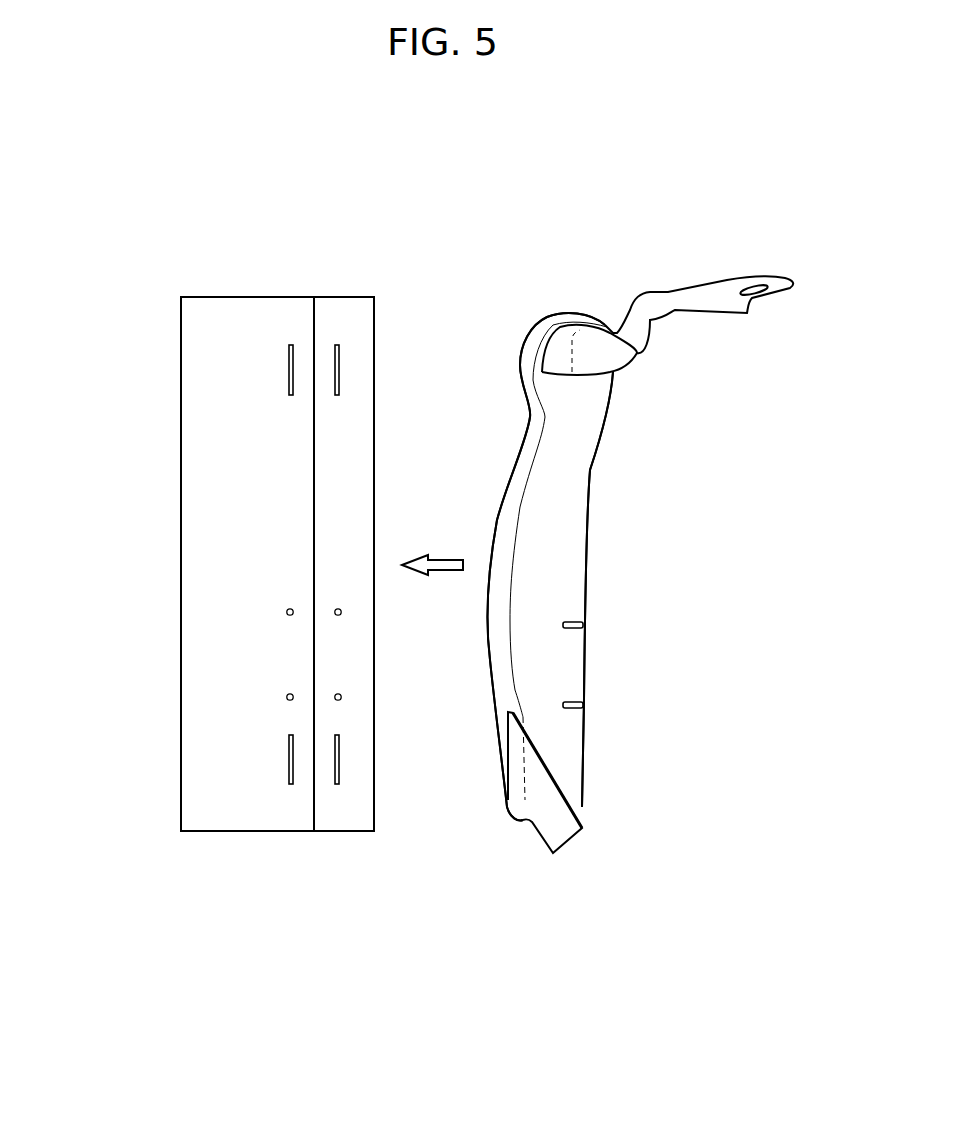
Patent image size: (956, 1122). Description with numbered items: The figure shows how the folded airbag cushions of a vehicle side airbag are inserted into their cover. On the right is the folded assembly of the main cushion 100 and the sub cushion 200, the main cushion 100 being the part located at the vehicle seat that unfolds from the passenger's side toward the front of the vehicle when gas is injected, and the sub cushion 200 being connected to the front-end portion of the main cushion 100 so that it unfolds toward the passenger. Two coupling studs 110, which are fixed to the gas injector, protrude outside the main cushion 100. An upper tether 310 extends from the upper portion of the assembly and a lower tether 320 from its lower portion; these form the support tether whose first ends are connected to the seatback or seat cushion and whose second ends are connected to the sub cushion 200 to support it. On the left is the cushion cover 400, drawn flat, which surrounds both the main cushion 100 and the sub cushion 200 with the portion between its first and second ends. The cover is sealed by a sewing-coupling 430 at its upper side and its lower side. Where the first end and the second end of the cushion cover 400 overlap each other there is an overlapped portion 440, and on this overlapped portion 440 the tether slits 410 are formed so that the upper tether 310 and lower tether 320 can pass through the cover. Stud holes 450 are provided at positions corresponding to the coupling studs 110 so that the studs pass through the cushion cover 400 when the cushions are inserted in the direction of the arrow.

The main cushion 100 is at (557, 535).
The sub cushion 200 is at (557, 535).
The coupling stud 110 is at (583, 625).
The upper tether 310 is at (692, 293).
The lower tether 320 is at (550, 798).
The cushion cover 400 is at (220, 532).
The tether slit 410 is at (292, 347).
The sewing-coupling 430 is at (228, 312).
The overlapped portion 440 is at (338, 656).
The stud hole 450 is at (287, 697).